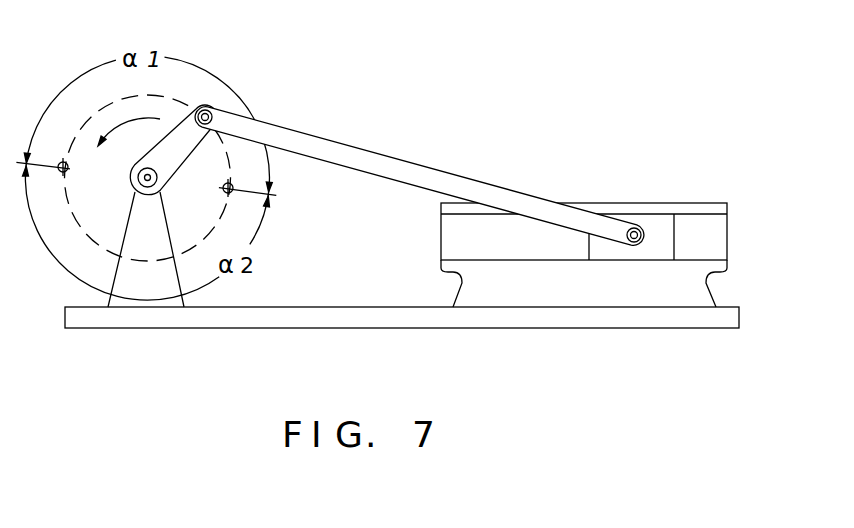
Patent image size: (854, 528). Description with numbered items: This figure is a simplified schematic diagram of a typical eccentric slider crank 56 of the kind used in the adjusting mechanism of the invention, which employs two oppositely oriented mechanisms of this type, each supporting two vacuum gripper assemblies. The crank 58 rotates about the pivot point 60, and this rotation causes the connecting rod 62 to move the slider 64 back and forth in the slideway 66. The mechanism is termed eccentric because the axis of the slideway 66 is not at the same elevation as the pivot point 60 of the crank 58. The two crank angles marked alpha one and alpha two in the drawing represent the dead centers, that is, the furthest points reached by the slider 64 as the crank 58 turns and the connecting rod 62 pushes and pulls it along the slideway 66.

The eccentric slider crank 56 is at (389, 53).
The crank 58 is at (183, 120).
The pivot point 60 is at (136, 176).
The connecting rod 62 is at (382, 155).
The slider 64 is at (670, 245).
The slideway 66 is at (702, 216).